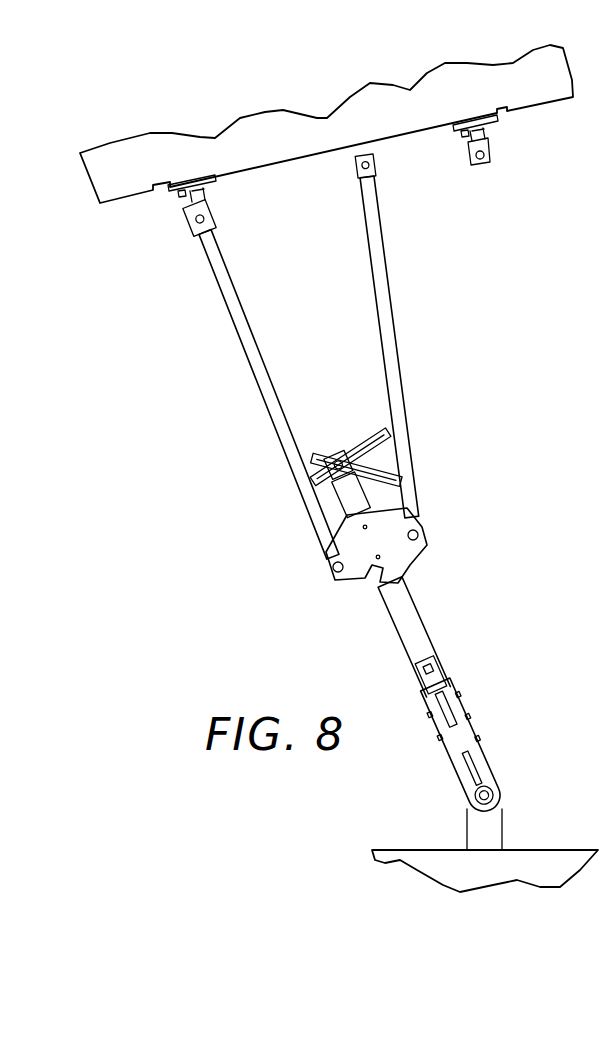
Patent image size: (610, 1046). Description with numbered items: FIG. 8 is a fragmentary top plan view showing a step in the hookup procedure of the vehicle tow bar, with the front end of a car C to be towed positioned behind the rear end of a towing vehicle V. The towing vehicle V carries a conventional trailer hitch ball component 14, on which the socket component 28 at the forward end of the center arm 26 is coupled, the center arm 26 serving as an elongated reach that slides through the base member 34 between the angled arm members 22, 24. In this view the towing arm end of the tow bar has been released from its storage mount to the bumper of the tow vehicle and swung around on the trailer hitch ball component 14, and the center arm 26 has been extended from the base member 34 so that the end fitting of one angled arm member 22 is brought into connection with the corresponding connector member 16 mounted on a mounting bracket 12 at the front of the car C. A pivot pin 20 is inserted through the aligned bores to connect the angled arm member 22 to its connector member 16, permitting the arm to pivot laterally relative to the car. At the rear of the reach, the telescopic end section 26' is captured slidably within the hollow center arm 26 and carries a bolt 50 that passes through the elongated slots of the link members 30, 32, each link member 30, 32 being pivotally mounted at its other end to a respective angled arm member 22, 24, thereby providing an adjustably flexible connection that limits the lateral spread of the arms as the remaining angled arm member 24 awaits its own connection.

The car C is at (420, 130).
The mounting bracket 12 is at (178, 196).
The connector member 16 is at (487, 146).
The pivot pin 20 is at (212, 212).
The angled arm member 22 is at (242, 345).
The angled arm member 24 is at (397, 335).
The link member 32 is at (380, 425).
The link member 30 is at (386, 462).
The bolt 50 is at (335, 451).
The telescopic end section 26' is at (294, 473).
The base member 34 is at (365, 578).
The center arm 26 is at (440, 696).
The socket component 28 is at (462, 735).
The trailer hitch ball component 14 is at (467, 828).
The towing vehicle V is at (560, 850).